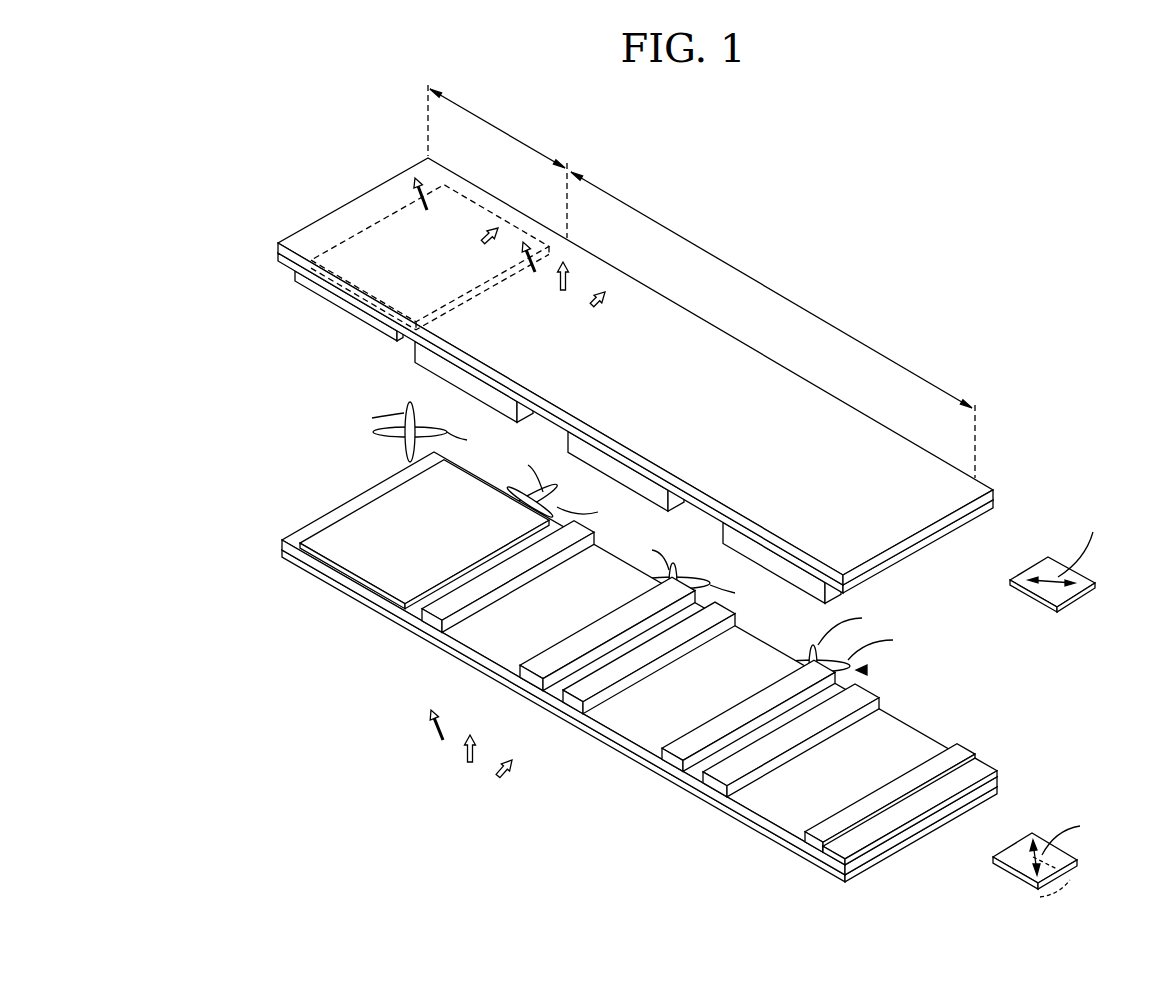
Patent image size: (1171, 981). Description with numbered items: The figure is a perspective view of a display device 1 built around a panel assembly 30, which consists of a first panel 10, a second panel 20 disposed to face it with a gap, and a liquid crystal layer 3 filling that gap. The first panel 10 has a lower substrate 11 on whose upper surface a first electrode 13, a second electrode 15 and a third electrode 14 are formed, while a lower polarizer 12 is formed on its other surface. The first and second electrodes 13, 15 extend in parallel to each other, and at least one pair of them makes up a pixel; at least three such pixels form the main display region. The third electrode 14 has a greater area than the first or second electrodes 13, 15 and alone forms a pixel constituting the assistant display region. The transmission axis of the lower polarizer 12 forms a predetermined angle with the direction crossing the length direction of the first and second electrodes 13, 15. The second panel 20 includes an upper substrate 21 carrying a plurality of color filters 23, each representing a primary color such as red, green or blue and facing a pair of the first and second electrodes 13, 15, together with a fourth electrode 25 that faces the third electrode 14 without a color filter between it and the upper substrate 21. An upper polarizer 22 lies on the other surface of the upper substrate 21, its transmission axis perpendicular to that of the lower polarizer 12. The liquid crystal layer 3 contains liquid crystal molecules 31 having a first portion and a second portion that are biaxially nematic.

The display device 1 is at (289, 125).
The liquid crystal layer 3 is at (273, 286).
The first panel 10 is at (273, 521).
The lower substrate 11 is at (353, 587).
The lower polarizer 12 is at (312, 572).
The first electrode 13 is at (413, 633).
The third electrode 14 is at (387, 595).
The second electrode 15 is at (507, 680).
The second panel 20 is at (273, 245).
The upper substrate 21 is at (980, 508).
The upper polarizer 22 is at (903, 437).
The color filters 23 is at (443, 368).
The fourth electrode 25 is at (340, 300).
The panel assembly 30 is at (234, 268).
The liquid crystal molecules 31 is at (862, 670).